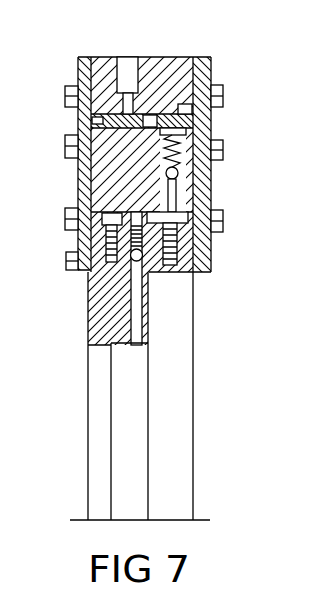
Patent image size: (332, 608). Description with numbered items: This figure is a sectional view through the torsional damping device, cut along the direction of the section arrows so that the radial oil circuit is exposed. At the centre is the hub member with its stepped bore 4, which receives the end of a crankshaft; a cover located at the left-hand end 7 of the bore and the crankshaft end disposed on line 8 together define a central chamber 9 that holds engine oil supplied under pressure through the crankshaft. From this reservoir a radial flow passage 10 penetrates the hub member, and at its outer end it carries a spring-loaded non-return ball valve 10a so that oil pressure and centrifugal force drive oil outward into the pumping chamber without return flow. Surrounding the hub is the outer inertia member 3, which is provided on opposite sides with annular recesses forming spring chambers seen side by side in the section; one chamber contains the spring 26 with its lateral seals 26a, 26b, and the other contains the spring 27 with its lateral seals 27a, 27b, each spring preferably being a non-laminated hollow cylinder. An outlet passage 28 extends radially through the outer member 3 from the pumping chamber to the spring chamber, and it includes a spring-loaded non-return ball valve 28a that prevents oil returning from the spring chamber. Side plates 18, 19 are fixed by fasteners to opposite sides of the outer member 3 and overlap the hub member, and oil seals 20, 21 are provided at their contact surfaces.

The outer inertia member 3 is at (105, 62).
The stepped bore 4 is at (164, 275).
The left-hand end of the bore 7 is at (103, 420).
The line of the crankshaft end 8 is at (149, 407).
The central chamber 9 is at (129, 382).
The radial flow passage 10 is at (142, 312).
The spring-loaded non-return ball valve 10a is at (205, 226).
The side plate 18 is at (77, 176).
The side plate 19 is at (204, 197).
The oil seal 20 is at (73, 262).
The oil seal 21 is at (194, 260).
The spring 26 is at (70, 146).
The lateral seal 26a is at (98, 121).
The lateral seal 26b is at (112, 69).
The spring 27 is at (184, 110).
The lateral seal 27a is at (149, 116).
The lateral seal 27b is at (213, 110).
The outlet passage 28 is at (174, 187).
The non-return ball valve 28a is at (195, 128).